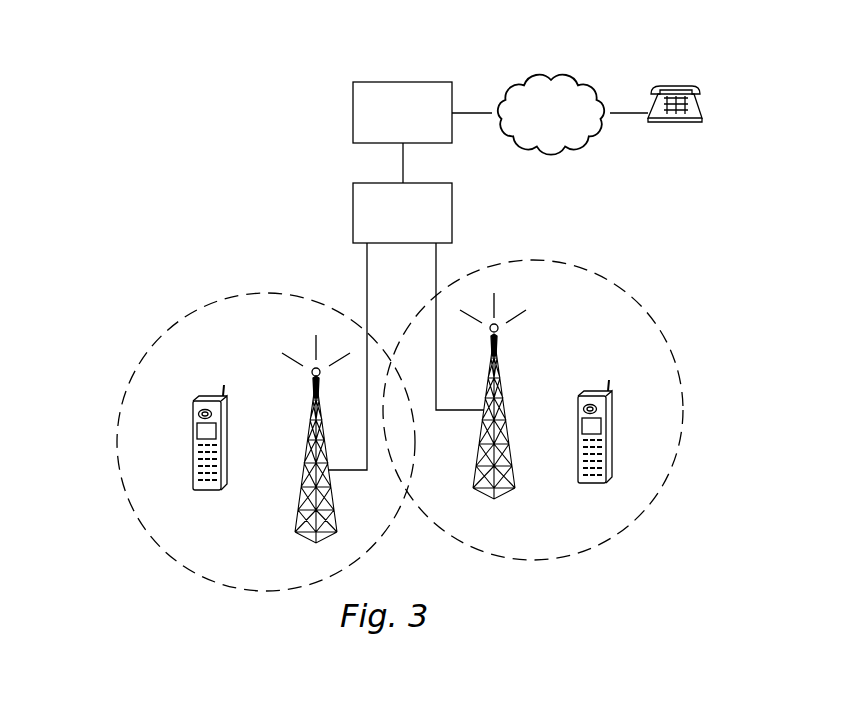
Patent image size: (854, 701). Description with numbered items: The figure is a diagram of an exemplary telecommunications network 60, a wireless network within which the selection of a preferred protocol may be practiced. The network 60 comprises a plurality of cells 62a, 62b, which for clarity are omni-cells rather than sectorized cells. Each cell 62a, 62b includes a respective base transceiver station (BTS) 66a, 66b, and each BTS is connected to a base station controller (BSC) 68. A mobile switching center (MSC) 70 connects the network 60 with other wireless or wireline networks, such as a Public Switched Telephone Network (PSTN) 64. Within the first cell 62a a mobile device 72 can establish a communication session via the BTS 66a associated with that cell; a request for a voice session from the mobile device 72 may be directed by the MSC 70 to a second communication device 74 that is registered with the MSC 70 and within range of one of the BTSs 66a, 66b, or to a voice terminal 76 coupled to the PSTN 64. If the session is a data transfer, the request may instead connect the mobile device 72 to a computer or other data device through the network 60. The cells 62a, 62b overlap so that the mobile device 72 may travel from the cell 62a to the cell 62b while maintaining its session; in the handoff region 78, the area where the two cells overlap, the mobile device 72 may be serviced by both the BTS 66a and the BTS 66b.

The telecommunications network 60 is at (176, 188).
The cell 62a is at (118, 445).
The cell 62b is at (683, 420).
The Public Switched Telephone Network (PSTN) 64 is at (578, 74).
The base transceiver station (BTS) 66a is at (303, 470).
The base transceiver station (BTS) 66b is at (510, 427).
The base station controller (BSC) 68 is at (353, 212).
The mobile switching center (MSC) 70 is at (353, 112).
The mobile device 72 is at (194, 413).
The communication device 74 is at (612, 440).
The voice terminal 76 is at (675, 82).
The handoff region 78 is at (408, 442).